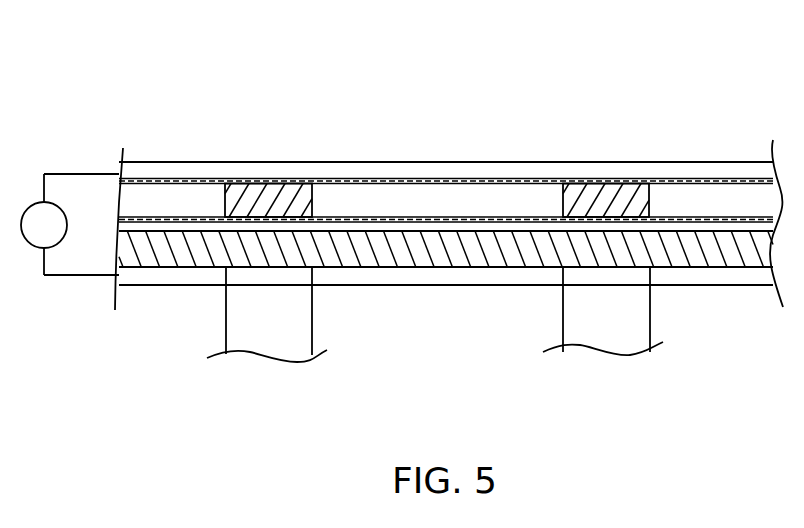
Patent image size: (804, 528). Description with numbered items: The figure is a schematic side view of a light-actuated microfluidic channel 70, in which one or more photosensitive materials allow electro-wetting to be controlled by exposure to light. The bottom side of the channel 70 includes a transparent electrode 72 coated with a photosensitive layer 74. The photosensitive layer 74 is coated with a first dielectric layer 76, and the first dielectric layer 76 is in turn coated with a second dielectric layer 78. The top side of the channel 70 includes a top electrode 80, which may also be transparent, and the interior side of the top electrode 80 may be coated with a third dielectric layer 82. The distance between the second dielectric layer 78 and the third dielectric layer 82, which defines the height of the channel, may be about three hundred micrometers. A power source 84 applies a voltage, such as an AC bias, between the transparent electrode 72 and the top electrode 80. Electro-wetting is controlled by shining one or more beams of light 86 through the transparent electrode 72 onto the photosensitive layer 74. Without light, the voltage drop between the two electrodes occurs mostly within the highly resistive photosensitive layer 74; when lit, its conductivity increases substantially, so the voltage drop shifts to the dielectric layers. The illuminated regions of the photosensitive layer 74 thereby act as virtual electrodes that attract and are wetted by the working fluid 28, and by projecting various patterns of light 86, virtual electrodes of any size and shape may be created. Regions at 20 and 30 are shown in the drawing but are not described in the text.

The light-actuated microfluidic channel 70 is at (663, 65).
The top electrode 80 is at (330, 172).
The third dielectric layer 82 is at (383, 178).
The second dielectric layer 78 is at (512, 217).
The dielectric gap layer 20 is at (702, 205).
The second electrode block 30 is at (248, 203).
The working fluid 28 is at (605, 203).
The first dielectric layer 76 is at (473, 225).
The photosensitive layer 74 is at (388, 250).
The transparent electrode 72 is at (172, 275).
The beams of light 86 is at (258, 328).
The power source 84 is at (33, 236).